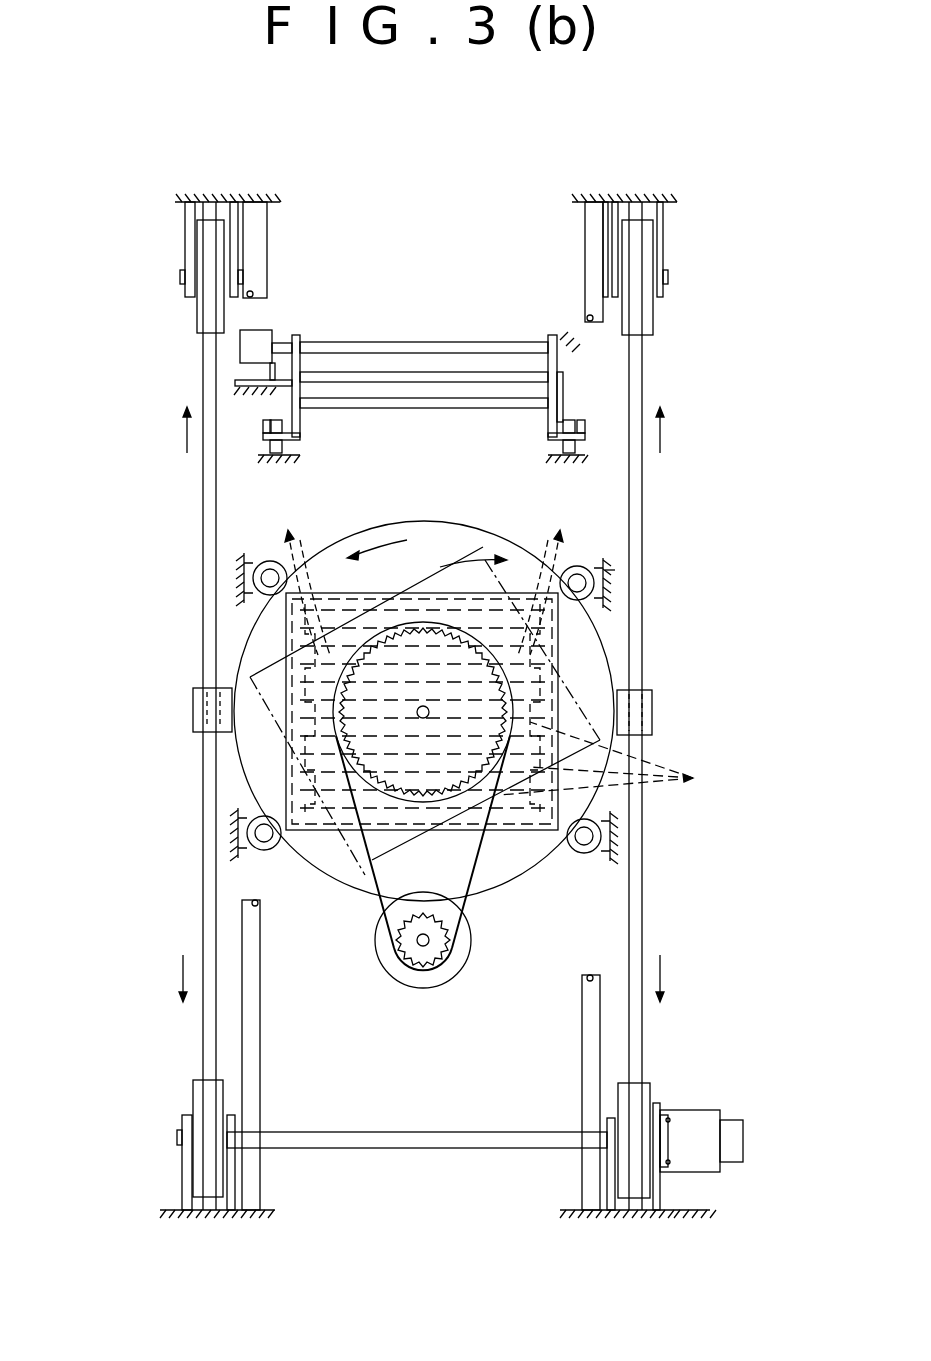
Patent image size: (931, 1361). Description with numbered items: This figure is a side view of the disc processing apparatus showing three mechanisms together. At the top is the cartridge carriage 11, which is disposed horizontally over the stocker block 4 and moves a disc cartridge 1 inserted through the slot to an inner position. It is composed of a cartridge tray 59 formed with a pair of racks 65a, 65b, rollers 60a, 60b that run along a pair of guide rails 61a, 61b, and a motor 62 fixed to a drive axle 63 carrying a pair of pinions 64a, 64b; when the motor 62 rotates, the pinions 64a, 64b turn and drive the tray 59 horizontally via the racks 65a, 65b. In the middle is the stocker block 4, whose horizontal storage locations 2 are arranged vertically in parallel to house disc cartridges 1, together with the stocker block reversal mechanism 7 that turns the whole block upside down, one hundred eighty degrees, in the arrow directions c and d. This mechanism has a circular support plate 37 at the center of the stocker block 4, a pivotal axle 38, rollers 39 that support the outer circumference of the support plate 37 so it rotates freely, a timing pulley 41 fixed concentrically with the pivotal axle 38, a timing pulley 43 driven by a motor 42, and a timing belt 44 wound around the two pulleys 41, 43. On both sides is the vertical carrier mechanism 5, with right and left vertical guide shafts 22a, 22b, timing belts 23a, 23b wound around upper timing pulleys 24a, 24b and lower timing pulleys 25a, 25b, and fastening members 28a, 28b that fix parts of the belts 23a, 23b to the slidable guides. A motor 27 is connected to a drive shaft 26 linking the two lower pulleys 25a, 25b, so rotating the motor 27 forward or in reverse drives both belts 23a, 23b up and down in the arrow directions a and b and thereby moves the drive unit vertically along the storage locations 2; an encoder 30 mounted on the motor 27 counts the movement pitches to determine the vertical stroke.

The disc cartridge 1 is at (502, 395).
The storage location 2 is at (420, 572).
The stocker block 4 is at (288, 622).
The vertical carrier mechanism 5 is at (193, 910).
The stocker block reversal mechanism 7 is at (238, 781).
The cartridge carriage 11 is at (383, 342).
The vertical guide shaft 22a is at (593, 248).
The vertical guide shaft 22b is at (262, 228).
The timing belt 23a is at (640, 520).
The timing belt 23b is at (215, 497).
The upper timing pulley 24a is at (650, 320).
The upper timing pulley 24b is at (205, 330).
The lower timing pulley 25a is at (647, 1090).
The lower timing pulley 25b is at (193, 1118).
The drive shaft 26 is at (418, 1135).
The motor 27 is at (703, 1120).
The fastening member 28a is at (650, 712).
The fastening member 28b is at (197, 710).
The encoder 30 is at (735, 1135).
The circular support plate 37 is at (612, 572).
The pivotal axle 38 is at (430, 712).
The roller 39 is at (257, 566).
The timing pulley 41 is at (373, 827).
The motor 42 is at (460, 957).
The timing pulley 43 is at (395, 957).
The timing belt 44 is at (470, 873).
The cartridge tray 59 is at (418, 408).
The roller 60a is at (572, 425).
The roller 60b is at (275, 432).
The guide rail 61a is at (582, 455).
The guide rail 61b is at (300, 452).
The motor 62 is at (262, 345).
The drive axle 63 is at (418, 345).
The pinion 64a is at (552, 340).
The pinion 64b is at (296, 340).
The rack 65a is at (555, 375).
The rack 65b is at (290, 380).
The arrow direction a is at (181, 977).
The arrow direction b is at (185, 430).
The arrow direction c is at (375, 538).
The arrow direction d is at (455, 562).